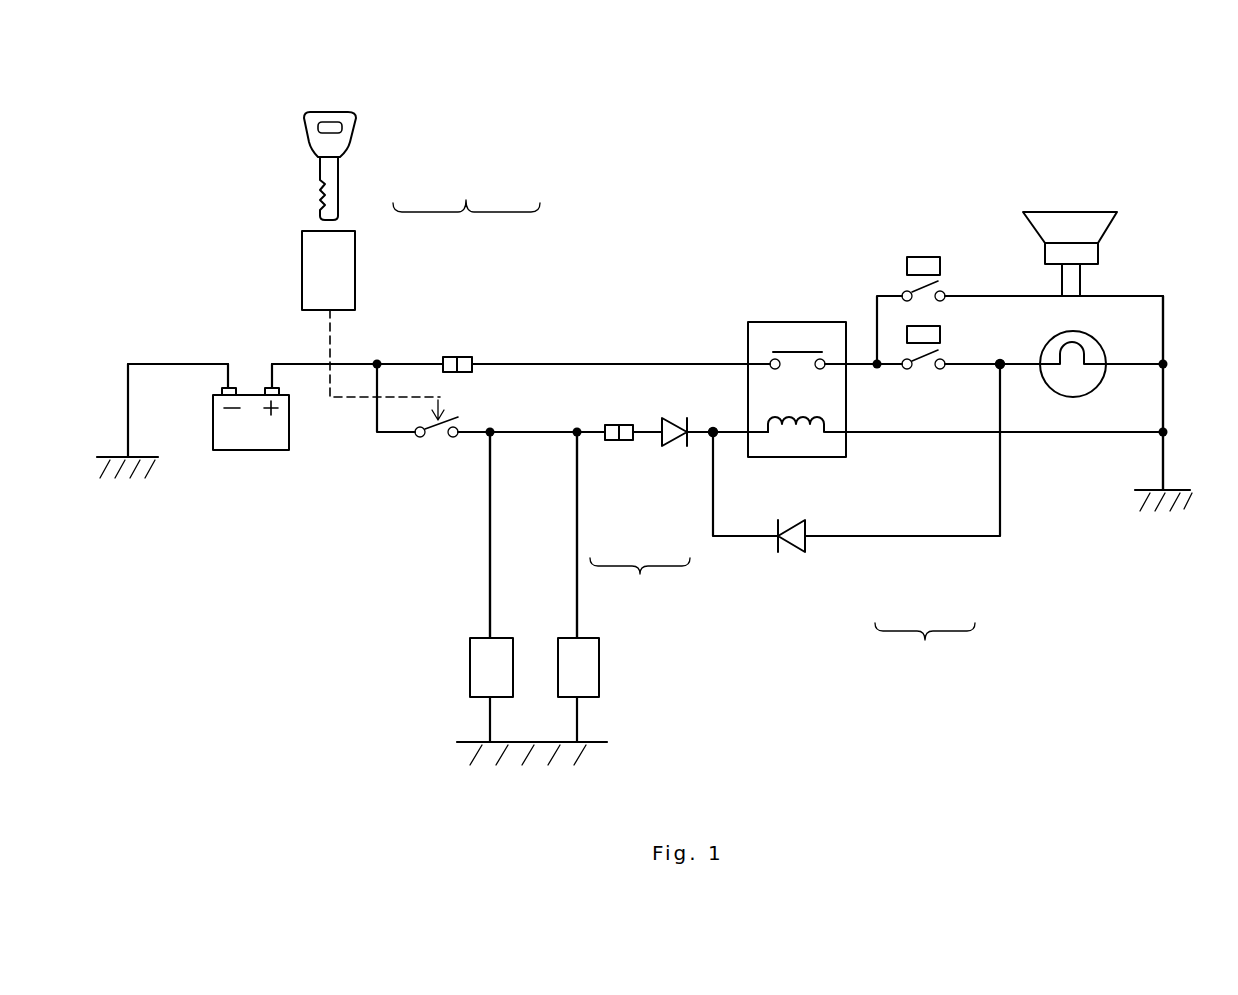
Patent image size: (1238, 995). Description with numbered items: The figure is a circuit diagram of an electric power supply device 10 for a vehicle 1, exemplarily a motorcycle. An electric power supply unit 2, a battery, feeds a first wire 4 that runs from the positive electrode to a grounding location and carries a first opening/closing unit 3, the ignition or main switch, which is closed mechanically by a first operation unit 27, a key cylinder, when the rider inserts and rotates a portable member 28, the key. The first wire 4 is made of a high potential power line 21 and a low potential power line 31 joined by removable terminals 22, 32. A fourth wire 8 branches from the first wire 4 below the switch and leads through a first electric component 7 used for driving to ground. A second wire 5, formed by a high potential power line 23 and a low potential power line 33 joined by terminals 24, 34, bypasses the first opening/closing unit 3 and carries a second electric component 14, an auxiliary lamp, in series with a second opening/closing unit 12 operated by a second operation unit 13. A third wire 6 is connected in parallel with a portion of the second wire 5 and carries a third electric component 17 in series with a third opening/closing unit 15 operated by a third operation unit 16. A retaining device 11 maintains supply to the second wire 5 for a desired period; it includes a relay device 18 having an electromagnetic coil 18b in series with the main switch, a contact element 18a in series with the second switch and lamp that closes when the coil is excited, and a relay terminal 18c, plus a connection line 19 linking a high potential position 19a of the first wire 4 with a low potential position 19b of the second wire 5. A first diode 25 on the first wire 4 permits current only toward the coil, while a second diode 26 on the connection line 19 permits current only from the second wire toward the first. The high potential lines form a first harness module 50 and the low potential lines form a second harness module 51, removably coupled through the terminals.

The vehicle 1 is at (212, 200).
The electric power supply unit 2 is at (250, 452).
The first opening/closing unit 3 is at (438, 438).
The first wire 4 is at (640, 580).
The second wire 5 is at (466, 188).
The third wire 6 is at (1148, 293).
The first electric component 7 is at (470, 672).
The fourth wire 8 is at (490, 580).
The electric power supply device 10 is at (605, 305).
The retaining device 11 is at (925, 644).
The second opening/closing unit 12 is at (922, 368).
The second operation unit 13 is at (942, 333).
The second electric component 14 is at (1100, 386).
The third opening/closing unit 15 is at (943, 287).
The third operation unit 16 is at (925, 255).
The third electric component 17 is at (1068, 211).
The relay device 18 is at (832, 457).
The contact element 18a is at (797, 351).
The electromagnetic coil 18b is at (826, 418).
The relay terminal 18c is at (748, 426).
The connection line 19 is at (948, 538).
The high potential position 19a is at (716, 438).
The low potential position 19b is at (1003, 370).
The high potential power line 21 is at (592, 438).
The terminal 22 is at (612, 424).
The high potential power line 23 is at (415, 362).
The terminal 24 is at (450, 356).
The first diode 25 is at (668, 446).
The second diode 26 is at (806, 552).
The first operation unit 27 is at (302, 268).
The portable member 28 is at (300, 115).
The low potential power line 31 is at (642, 440).
The terminal 32 is at (626, 424).
The low potential power line 33 is at (517, 362).
The terminal 34 is at (465, 356).
The first harness module 50 is at (355, 508).
The second harness module 51 is at (855, 288).